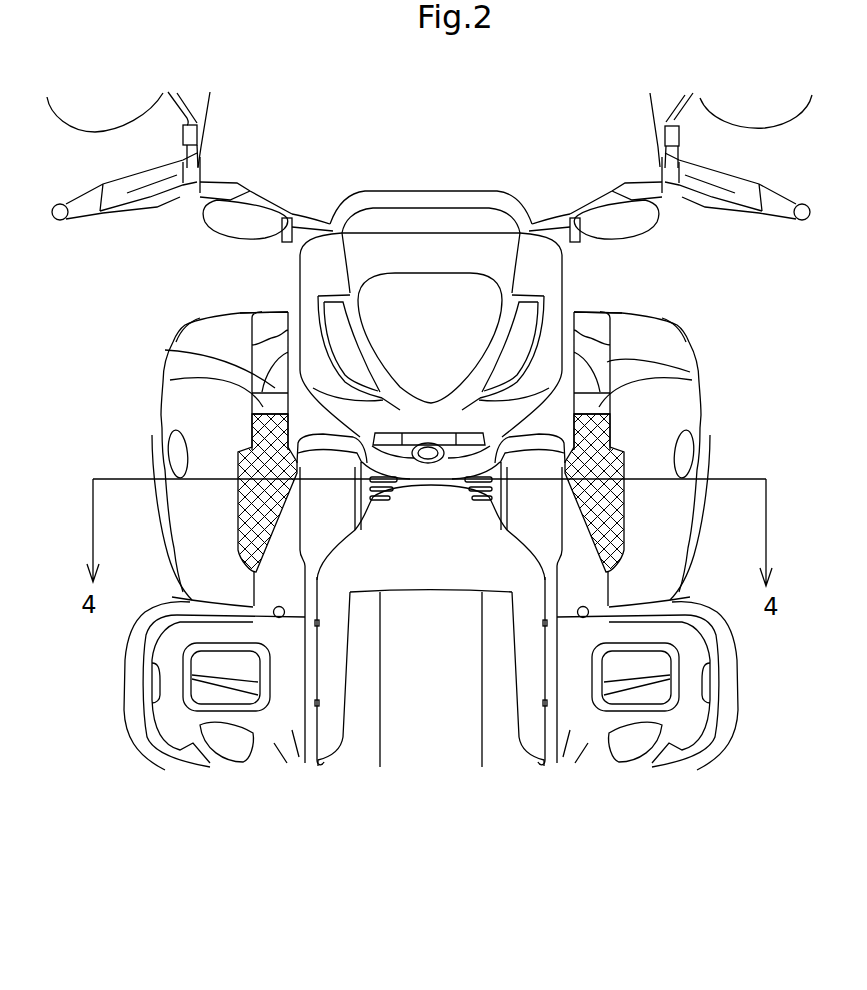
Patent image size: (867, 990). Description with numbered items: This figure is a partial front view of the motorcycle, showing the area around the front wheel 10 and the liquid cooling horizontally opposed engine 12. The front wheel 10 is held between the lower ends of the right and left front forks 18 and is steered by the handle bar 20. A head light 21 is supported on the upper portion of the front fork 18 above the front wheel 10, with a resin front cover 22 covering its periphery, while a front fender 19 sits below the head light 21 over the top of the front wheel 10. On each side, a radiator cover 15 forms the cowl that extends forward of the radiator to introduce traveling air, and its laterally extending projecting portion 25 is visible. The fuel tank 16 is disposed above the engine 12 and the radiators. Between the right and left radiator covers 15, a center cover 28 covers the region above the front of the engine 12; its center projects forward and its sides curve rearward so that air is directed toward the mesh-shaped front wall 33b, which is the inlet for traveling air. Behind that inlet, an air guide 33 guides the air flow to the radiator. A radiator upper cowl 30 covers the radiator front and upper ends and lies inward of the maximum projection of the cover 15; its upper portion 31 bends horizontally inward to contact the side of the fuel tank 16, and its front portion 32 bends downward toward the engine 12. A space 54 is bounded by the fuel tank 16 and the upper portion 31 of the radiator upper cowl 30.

The front wheel 10 is at (482, 740).
The liquid cooling horizontally opposed engine 12 is at (570, 733).
The radiator cover 15 is at (240, 293).
The fuel tank 16 is at (596, 292).
The front fork 18 is at (313, 463).
The front fender 19 is at (428, 583).
The handle bar 20 is at (150, 173).
The head light 21 is at (432, 290).
The front cover 22 is at (407, 217).
The projecting portion 25 is at (158, 432).
The center cover 28 is at (380, 500).
The radiator upper cowl 30 is at (178, 325).
The upper portion 31 is at (205, 320).
The front portion 32 is at (182, 508).
The air guide 33 is at (170, 380).
The front wall 33b is at (608, 500).
The space 54 is at (165, 350).